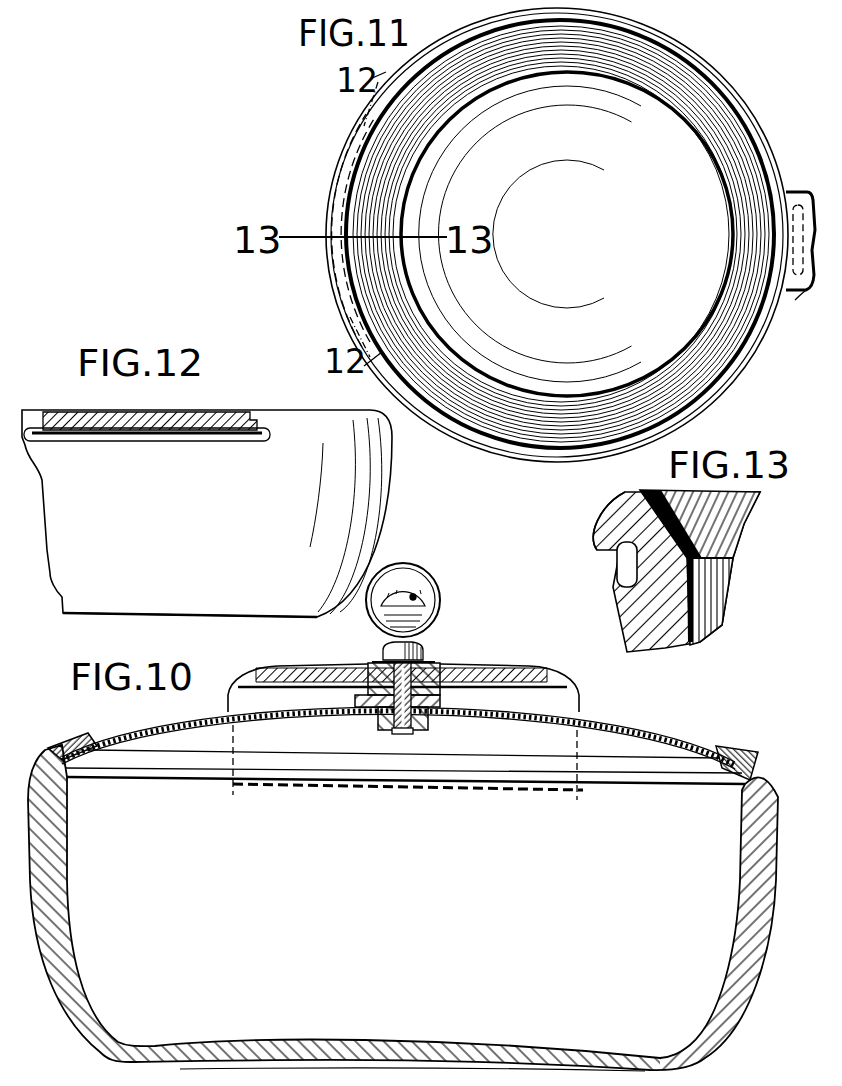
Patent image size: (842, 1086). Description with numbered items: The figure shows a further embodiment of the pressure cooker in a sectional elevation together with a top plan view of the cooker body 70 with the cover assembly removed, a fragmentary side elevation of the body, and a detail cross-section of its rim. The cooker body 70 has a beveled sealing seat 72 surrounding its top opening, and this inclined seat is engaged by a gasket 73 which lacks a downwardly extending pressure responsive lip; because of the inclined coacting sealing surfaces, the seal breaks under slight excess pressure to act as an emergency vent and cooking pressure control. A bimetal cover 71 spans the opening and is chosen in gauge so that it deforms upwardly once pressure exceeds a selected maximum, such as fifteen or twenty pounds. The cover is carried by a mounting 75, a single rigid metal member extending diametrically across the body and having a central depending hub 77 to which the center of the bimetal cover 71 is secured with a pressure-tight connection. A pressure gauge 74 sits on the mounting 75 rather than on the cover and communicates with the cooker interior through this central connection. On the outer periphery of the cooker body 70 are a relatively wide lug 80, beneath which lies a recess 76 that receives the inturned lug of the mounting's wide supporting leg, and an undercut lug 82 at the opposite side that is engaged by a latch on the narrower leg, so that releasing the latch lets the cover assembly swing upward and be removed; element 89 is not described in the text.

In FIG. 11, the cooker body 70 is at (761, 123).
In FIG. 12, the cooker body 70 is at (353, 522).
In FIG. 13, the cooker body 70 is at (632, 606).
In FIG. 10, the cooker body 70 is at (45, 897).
In FIG. 10, the bimetal cover 71 is at (272, 716).
In FIG. 13, the beveled sealing seat 72 is at (735, 530).
In FIG. 10, the beveled sealing seat 72 is at (177, 777).
In FIG. 10, the gasket 73 is at (76, 736).
In FIG. 10, the pressure gauge 74 is at (441, 600).
In FIG. 10, the mounting 75 is at (341, 668).
In FIG. 11, the recess 76 is at (344, 283).
In FIG. 12, the recess 76 is at (209, 430).
In FIG. 13, the recess 76 is at (627, 568).
In FIG. 10, the central depending hub 77 is at (446, 665).
In FIG. 11, the lug 80 is at (331, 268).
In FIG. 12, the lug 80 is at (161, 411).
In FIG. 13, the lug 80 is at (613, 532).
In FIG. 11, the undercut lug 82 is at (797, 192).
In FIG. 11, the handle edge 89 is at (795, 298).